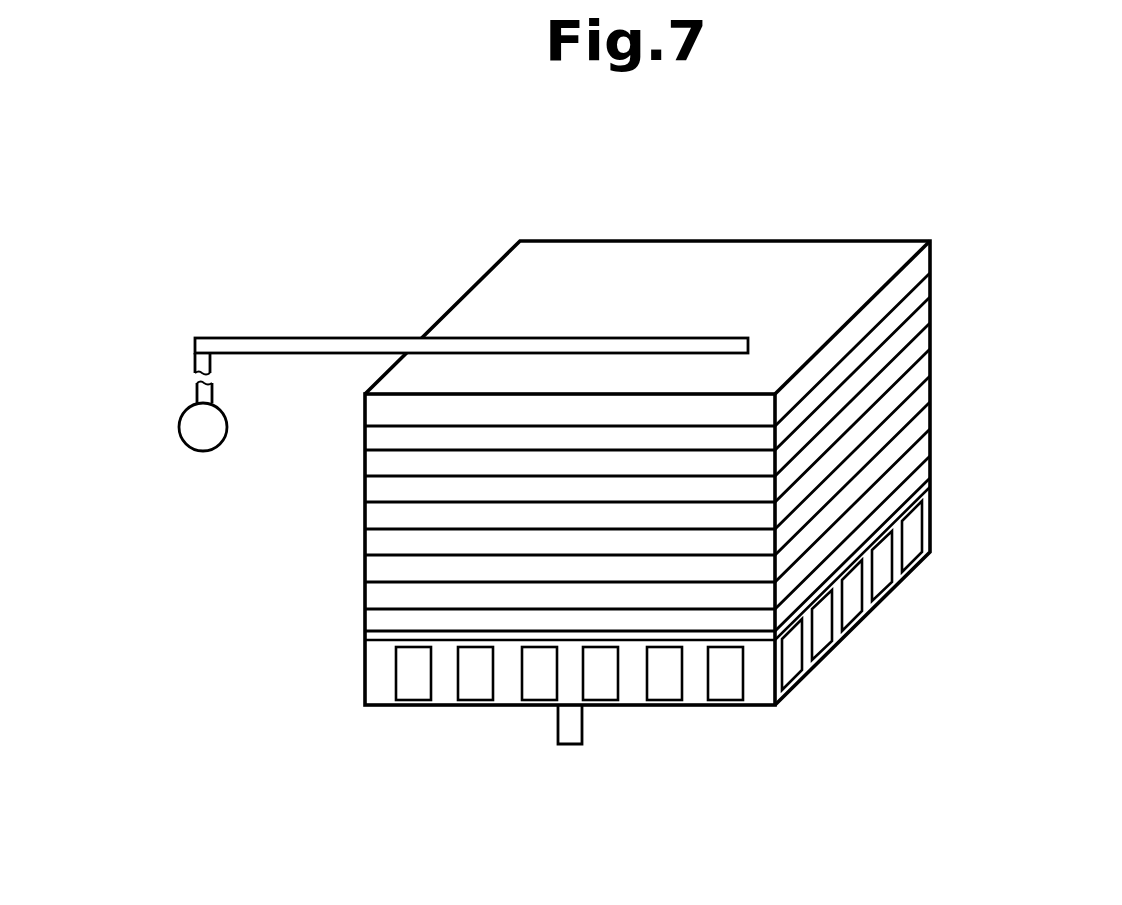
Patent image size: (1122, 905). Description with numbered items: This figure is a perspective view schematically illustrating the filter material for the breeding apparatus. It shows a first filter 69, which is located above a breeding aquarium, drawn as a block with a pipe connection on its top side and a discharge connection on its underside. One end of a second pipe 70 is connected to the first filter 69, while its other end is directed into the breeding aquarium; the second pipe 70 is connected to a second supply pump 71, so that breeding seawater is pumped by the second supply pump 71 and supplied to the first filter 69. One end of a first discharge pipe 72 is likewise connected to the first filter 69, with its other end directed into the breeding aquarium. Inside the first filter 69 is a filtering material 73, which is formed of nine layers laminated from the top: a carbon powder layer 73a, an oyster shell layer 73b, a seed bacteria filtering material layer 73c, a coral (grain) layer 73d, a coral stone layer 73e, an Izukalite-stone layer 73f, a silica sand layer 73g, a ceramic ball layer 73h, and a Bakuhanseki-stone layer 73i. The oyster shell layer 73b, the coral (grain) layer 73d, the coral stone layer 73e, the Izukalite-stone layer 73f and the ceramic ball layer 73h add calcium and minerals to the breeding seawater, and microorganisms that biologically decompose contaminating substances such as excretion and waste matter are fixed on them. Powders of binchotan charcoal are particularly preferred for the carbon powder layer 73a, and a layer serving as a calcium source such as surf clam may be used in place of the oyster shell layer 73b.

The first filter 69 is at (840, 240).
The second pipe 70 is at (298, 354).
The second supply pump 71 is at (227, 430).
The first discharge pipe 72 is at (582, 732).
The filtering material 73 is at (730, 428).
The carbon powder layer 73a is at (931, 257).
The oyster shell layer 73b is at (931, 285).
The seed bacteria filtering material layer 73c is at (931, 310).
The coral (grain) layer 73d is at (931, 336).
The coral stone layer 73e is at (931, 362).
The Izukalite-stone layer 73f is at (931, 389).
The silica sand layer 73g is at (931, 416).
The ceramic ball layer 73h is at (931, 442).
The Bakuhanseki-stone layer 73i is at (685, 549).